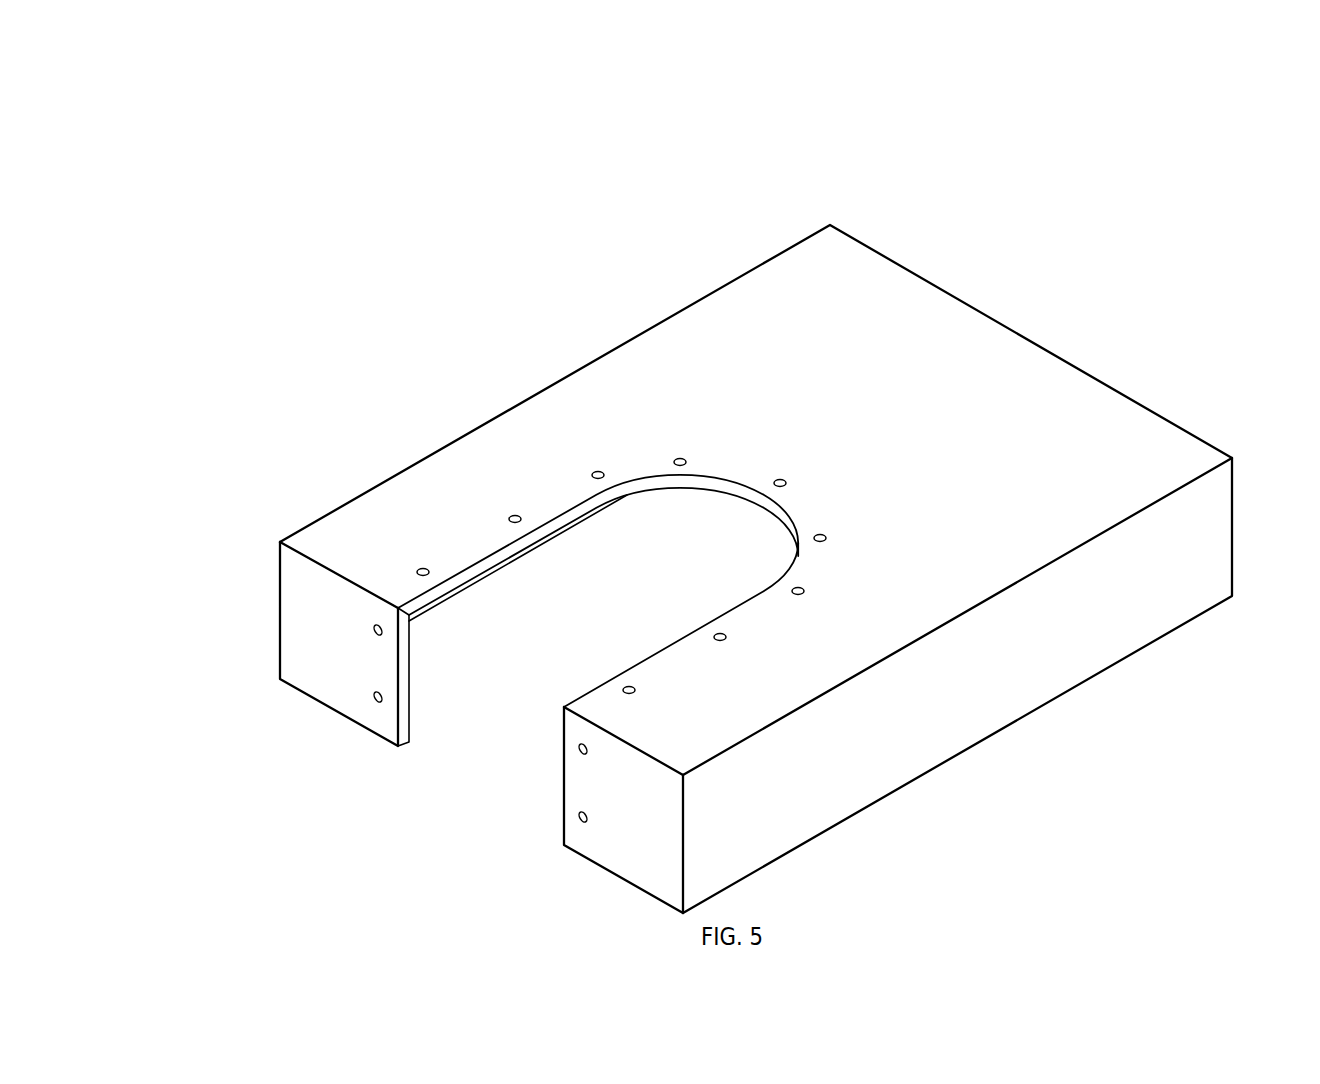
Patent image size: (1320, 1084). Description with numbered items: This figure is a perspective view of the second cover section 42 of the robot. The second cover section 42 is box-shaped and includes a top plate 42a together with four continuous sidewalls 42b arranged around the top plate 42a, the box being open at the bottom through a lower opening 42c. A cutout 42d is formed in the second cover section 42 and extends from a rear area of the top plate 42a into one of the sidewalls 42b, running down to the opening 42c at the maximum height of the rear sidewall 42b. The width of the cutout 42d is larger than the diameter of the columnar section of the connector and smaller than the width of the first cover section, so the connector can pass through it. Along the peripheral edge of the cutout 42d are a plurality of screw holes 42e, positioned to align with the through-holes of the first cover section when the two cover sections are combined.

The second cover section 42 is at (826, 146).
The top plate 42a is at (757, 325).
The sidewalls 42b is at (323, 630).
The lower opening 42c is at (495, 575).
The cutout 42d is at (408, 707).
The screw holes 42e is at (514, 512).